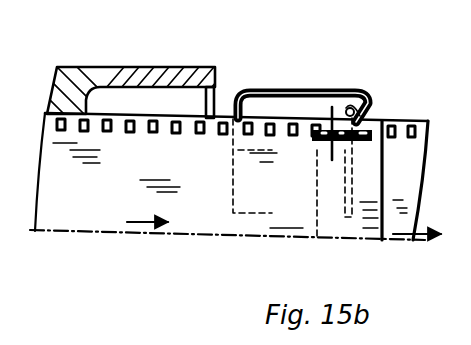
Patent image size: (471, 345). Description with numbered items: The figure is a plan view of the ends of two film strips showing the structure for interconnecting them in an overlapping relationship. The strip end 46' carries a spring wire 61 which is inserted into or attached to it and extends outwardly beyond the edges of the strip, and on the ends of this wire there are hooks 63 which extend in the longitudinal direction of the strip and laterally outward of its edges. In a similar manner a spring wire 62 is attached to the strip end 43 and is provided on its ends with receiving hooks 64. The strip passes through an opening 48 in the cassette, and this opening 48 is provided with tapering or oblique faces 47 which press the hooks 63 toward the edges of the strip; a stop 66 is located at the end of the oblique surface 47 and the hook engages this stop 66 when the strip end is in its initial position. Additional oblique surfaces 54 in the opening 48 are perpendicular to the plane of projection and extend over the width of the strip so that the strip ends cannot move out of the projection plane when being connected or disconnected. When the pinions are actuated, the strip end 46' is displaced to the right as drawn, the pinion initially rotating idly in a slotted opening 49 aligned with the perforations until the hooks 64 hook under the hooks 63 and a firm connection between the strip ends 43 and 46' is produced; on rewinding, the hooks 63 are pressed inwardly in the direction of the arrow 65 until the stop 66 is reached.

The strip end 46' is at (235, 176).
The oblique faces 47 is at (142, 85).
The opening 48 is at (73, 87).
The oblique surfaces 54 is at (157, 112).
The spring wire 61 is at (232, 173).
The spring wire 62 is at (344, 186).
The hooks 63 is at (327, 88).
The receiving hooks 64 is at (363, 118).
The arrow 65 is at (330, 151).
The stop 66 is at (92, 100).
The slotted opening 49 is at (368, 173).
The strip end 43 is at (405, 184).